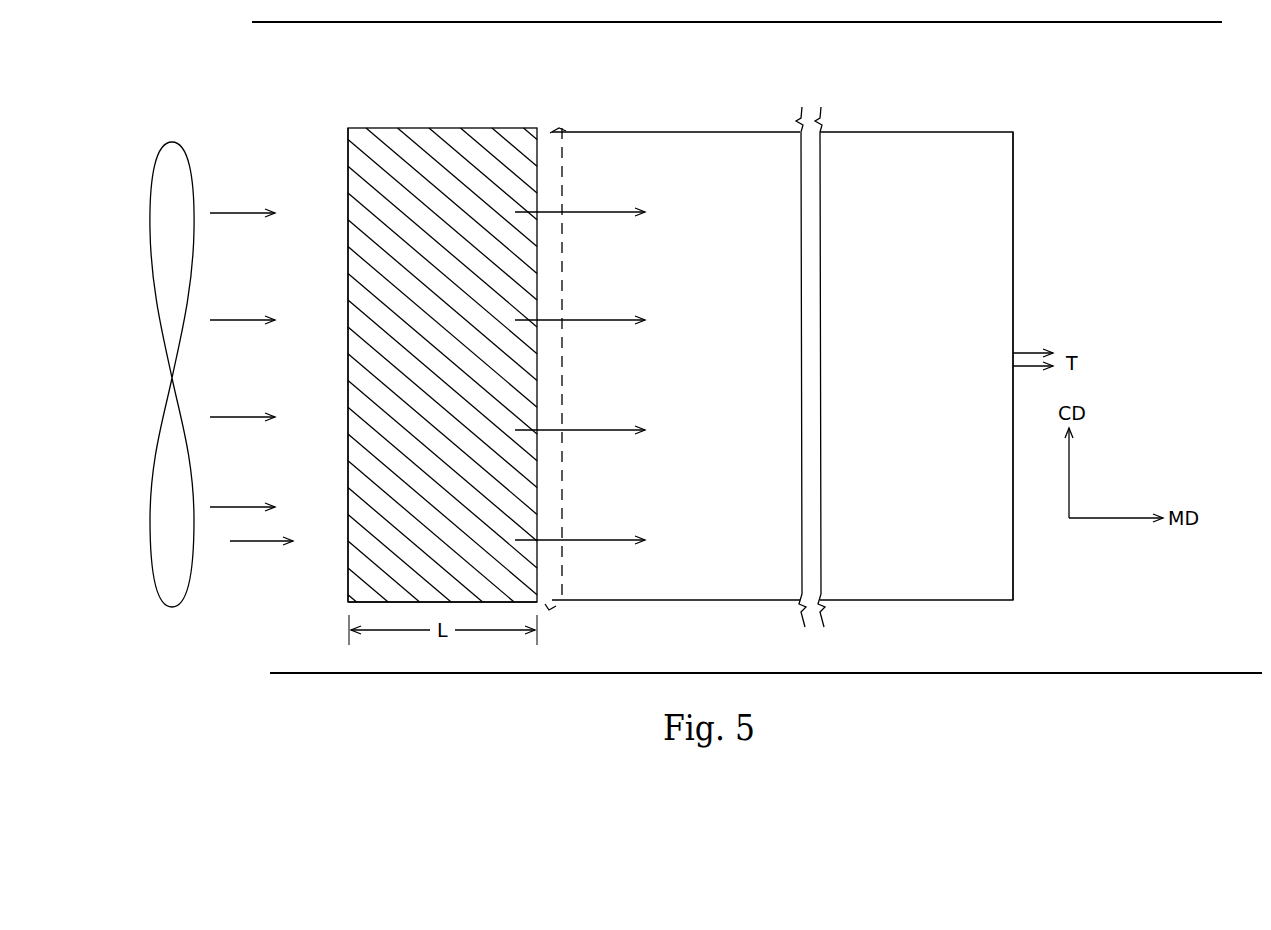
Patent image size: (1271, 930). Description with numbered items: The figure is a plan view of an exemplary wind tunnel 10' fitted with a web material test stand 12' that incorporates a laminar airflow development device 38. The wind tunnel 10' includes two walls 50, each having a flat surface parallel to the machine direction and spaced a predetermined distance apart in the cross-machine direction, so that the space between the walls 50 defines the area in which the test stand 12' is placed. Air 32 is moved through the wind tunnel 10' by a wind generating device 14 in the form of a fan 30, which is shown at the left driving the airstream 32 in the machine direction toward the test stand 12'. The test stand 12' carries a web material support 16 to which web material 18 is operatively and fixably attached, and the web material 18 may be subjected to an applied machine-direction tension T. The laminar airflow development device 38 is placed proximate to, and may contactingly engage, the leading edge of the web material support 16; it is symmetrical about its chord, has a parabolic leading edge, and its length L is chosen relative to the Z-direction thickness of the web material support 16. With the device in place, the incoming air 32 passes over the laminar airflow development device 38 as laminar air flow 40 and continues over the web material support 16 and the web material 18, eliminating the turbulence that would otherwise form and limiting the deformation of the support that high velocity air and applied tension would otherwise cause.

The wind tunnel 10' is at (1142, 339).
The web material test stand 12' is at (750, 342).
The wind generating device 14 is at (205, 135).
The web material support 16 is at (545, 607).
The web material 18 is at (743, 390).
The fan 30 is at (180, 606).
The air 32 is at (258, 158).
The laminar airflow development device 38 is at (462, 400).
The laminar air flow 40 is at (340, 533).
The walls 50 is at (1100, 22).